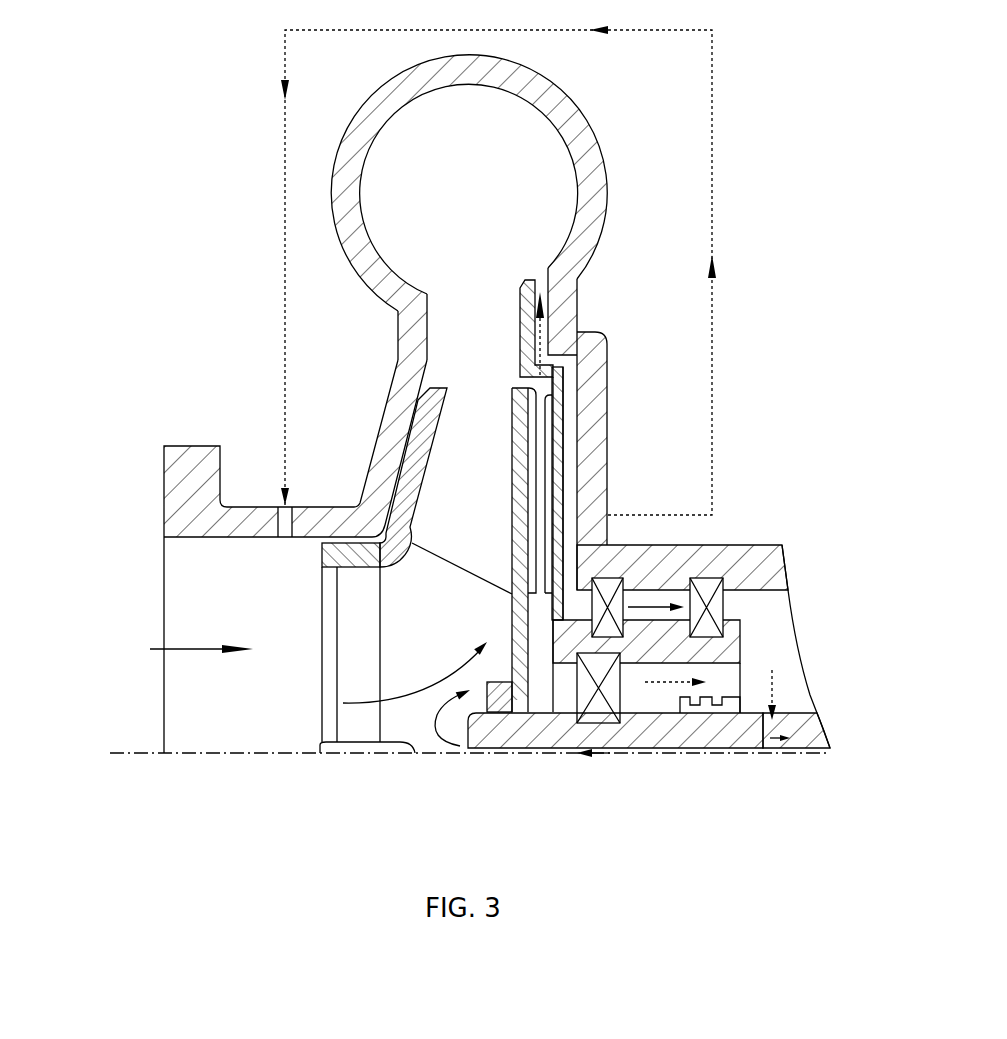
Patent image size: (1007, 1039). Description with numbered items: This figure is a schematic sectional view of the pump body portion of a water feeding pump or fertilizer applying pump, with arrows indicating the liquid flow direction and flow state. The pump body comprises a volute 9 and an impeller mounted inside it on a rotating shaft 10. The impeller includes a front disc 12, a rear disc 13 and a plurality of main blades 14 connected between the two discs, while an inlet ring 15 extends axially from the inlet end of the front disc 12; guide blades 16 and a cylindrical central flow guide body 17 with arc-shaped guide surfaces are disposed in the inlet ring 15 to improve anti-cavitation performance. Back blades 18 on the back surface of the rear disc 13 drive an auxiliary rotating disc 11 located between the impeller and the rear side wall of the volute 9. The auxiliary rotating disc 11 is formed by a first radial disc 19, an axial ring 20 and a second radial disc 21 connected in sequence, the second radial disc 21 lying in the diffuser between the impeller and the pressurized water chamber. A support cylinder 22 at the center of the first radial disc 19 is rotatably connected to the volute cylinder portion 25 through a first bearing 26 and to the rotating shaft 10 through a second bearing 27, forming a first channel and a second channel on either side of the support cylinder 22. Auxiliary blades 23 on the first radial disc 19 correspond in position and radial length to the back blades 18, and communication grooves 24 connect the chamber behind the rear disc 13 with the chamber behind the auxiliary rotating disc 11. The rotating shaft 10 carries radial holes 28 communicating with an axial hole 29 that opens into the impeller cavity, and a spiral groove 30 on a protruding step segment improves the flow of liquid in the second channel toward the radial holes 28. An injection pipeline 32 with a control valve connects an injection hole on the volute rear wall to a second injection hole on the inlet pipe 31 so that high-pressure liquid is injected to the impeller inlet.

The volute 9 is at (347, 217).
The rotating shaft 10 is at (542, 733).
The auxiliary rotating disc 11 is at (576, 373).
The front disc 12 is at (408, 487).
The rear disc 13 is at (519, 425).
The main blade 14 is at (471, 464).
The inlet ring 15 is at (351, 555).
The guide blade 16 is at (361, 648).
The central flow guide body 17 is at (365, 747).
The back blade 18 is at (541, 447).
The first radial disc 19 is at (561, 408).
The axial ring 20 is at (546, 368).
The second radial disc 21 is at (531, 327).
The support cylinder 22 is at (704, 650).
The auxiliary blade 23 is at (556, 473).
The communication groove 24 is at (564, 515).
The volute cylinder portion 25 is at (742, 567).
The first bearing 26 is at (721, 608).
The second bearing 27 is at (605, 714).
The radial hole 28 is at (784, 740).
The axial hole 29 is at (683, 750).
The spiral groove 30 is at (729, 708).
The inlet pipe 31 is at (239, 518).
The injection pipeline 32 is at (712, 162).